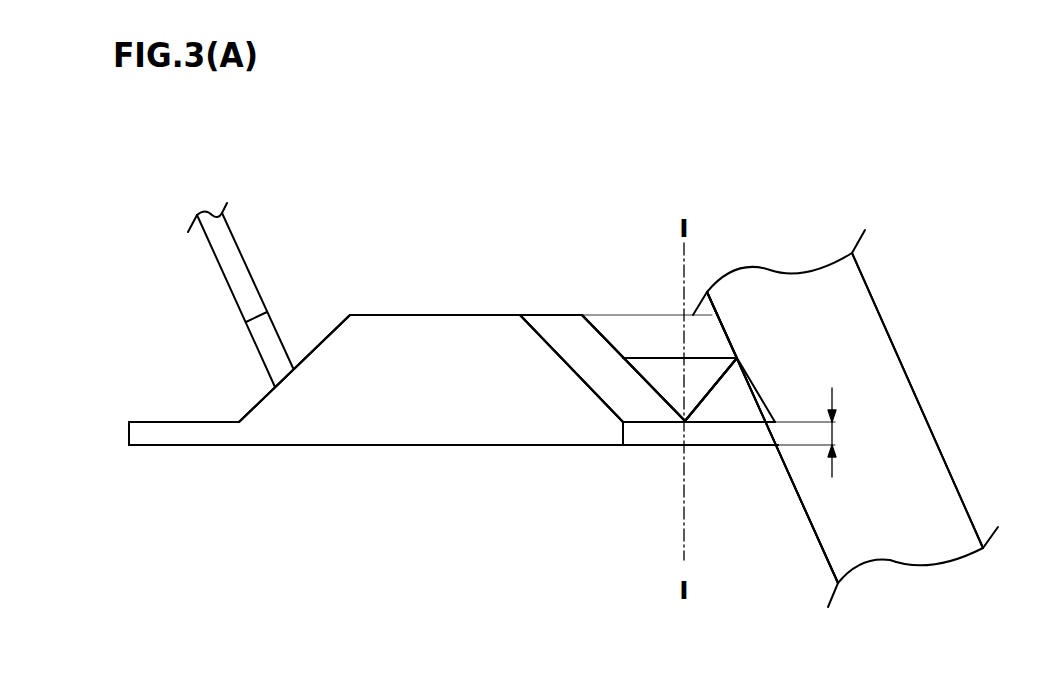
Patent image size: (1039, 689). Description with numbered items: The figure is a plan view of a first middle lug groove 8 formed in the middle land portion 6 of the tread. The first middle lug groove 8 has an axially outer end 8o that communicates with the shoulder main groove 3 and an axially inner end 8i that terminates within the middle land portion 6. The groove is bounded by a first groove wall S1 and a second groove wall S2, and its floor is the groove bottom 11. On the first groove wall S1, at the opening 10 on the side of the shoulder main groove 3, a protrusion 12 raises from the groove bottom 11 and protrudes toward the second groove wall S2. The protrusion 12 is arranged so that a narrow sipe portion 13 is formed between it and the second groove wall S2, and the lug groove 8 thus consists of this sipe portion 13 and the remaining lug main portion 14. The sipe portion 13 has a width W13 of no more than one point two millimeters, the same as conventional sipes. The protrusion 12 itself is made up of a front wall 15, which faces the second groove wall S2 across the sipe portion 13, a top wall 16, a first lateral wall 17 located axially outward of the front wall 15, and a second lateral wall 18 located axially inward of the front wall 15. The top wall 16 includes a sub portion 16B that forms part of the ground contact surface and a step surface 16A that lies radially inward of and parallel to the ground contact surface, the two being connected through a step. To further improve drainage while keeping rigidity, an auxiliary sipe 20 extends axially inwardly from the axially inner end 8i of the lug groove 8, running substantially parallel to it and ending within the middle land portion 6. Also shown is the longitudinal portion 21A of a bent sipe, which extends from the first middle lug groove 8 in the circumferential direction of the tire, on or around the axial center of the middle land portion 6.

The shoulder main groove 3 is at (873, 518).
The middle land portion 6 is at (313, 519).
The first middle lug groove 8 is at (607, 628).
The axially inner end 8i is at (237, 410).
The axially outer end 8o is at (757, 360).
The opening 10 is at (787, 400).
The groove bottom 11 is at (393, 402).
The protrusion 12 is at (722, 403).
The sipe portion 13 is at (708, 435).
The lug main portion 14 is at (472, 398).
The front wall 15 is at (650, 422).
The top wall 16 is at (560, 165).
The step surface 16A is at (667, 377).
The sub portion 16B is at (637, 333).
The first lateral wall 17 is at (737, 393).
The second lateral wall 18 is at (563, 333).
The auxiliary sipe 20 is at (185, 432).
The longitudinal portion 21A is at (235, 265).
The first groove wall S1 is at (418, 315).
The second groove wall S2 is at (400, 445).
The width of sipe portion W13 is at (837, 430).